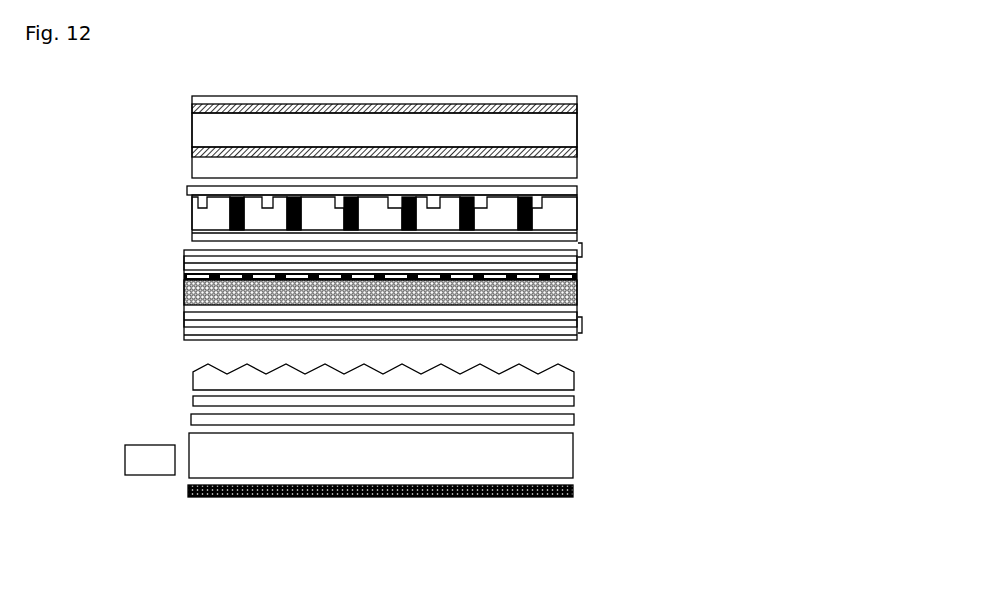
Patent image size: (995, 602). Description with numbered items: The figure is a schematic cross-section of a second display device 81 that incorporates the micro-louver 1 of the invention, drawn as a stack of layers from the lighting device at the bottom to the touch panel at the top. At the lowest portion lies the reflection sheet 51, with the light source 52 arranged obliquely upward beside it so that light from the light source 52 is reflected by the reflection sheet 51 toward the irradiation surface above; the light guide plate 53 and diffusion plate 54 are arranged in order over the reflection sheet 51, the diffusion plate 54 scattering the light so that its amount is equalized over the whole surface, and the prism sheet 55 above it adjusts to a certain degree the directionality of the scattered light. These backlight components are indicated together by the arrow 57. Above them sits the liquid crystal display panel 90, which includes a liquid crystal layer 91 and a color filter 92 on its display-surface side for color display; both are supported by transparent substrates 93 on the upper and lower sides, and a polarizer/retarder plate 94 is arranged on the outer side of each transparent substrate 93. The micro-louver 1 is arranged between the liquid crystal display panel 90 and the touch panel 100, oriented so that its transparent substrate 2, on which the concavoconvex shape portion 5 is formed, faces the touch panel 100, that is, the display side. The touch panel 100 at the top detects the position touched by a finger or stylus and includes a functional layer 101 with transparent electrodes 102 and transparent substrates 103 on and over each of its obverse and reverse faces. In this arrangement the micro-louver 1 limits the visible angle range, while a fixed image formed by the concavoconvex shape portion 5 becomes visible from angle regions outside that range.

The micro-louver 1 is at (343, 209).
The transparent substrate 2 is at (187, 189).
The concavoconvex shape portion 5 is at (190, 203).
The reflection sheet 51 is at (577, 490).
The light source 52 is at (143, 452).
The light guide plate 53 is at (565, 458).
The diffusion plate 54 is at (577, 420).
The prism sheet 55 is at (568, 378).
The backlight unit 57 is at (712, 433).
The second display device 81 is at (563, 540).
The liquid crystal display panel 90 is at (157, 292).
The liquid crystal layer 91 is at (577, 294).
The color filter 92 is at (577, 276).
The transparent substrates 93 is at (577, 262).
The polarizer/retarder plate 94 is at (583, 250).
The touch panel 100 is at (180, 135).
The functional layer 101 is at (573, 132).
The transparent electrodes 102 is at (577, 108).
The transparent substrates 103 is at (577, 97).